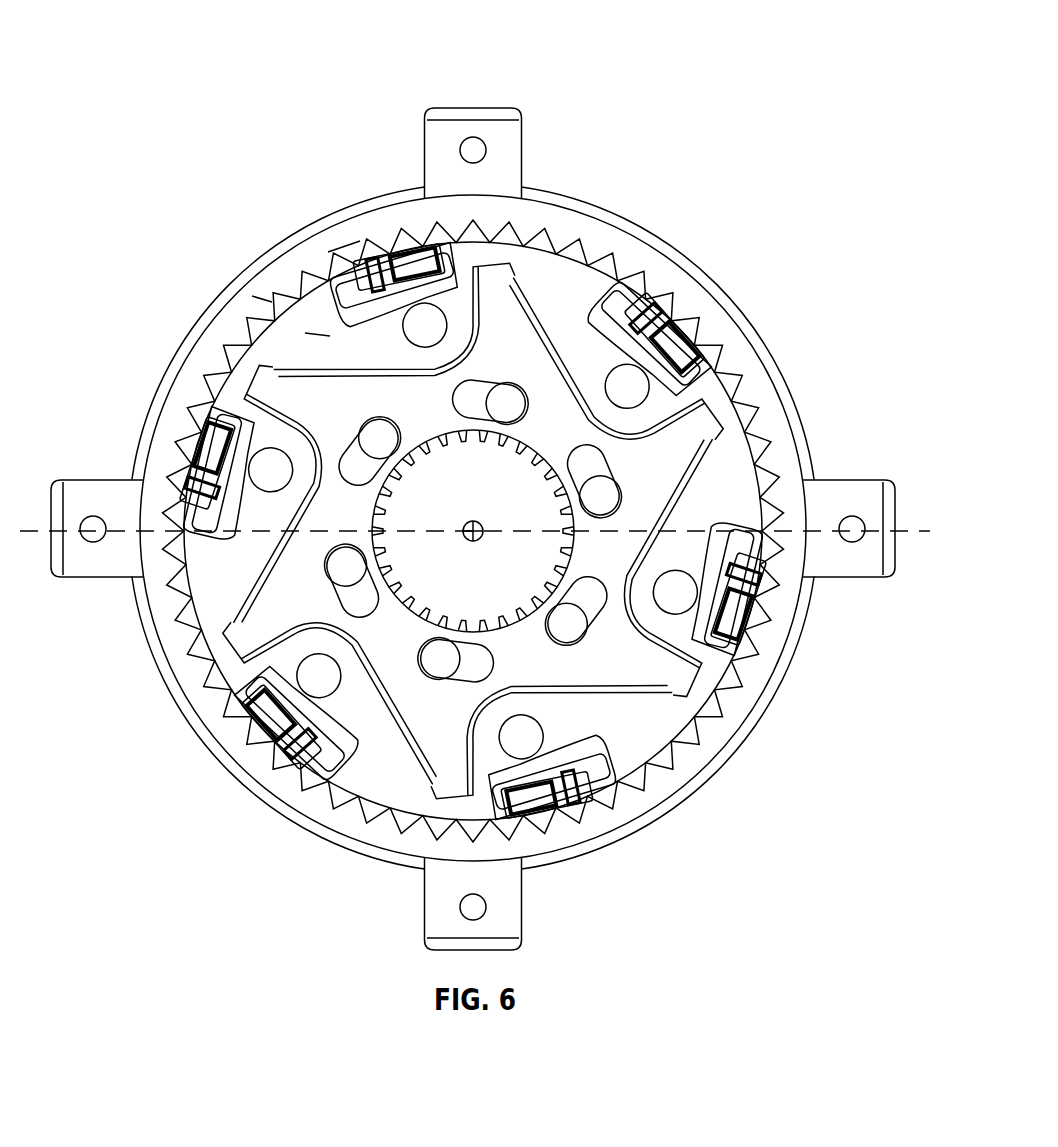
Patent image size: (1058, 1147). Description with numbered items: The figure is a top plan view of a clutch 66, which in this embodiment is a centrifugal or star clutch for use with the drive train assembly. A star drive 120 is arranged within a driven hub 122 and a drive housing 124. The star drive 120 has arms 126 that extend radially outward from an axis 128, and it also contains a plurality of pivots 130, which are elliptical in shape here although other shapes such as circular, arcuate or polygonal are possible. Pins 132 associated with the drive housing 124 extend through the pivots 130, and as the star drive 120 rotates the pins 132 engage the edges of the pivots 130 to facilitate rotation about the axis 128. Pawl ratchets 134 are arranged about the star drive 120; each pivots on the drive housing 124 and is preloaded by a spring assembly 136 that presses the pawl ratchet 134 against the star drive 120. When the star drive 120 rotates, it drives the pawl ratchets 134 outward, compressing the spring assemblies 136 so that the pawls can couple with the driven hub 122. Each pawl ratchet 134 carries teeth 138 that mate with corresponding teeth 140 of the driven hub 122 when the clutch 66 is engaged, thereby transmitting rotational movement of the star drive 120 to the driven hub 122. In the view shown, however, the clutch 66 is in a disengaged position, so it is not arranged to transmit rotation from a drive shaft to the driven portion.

The clutch 66 is at (704, 60).
The star drive 120 is at (702, 430).
The driven hub 122 is at (636, 256).
The drive housing 124 is at (690, 313).
The arms 126 is at (391, 255).
The axis 128 is at (474, 545).
The pivots 130 is at (343, 485).
The pins 132 is at (270, 293).
The pawl ratchets 134 is at (283, 318).
The spring assembly 136 is at (352, 250).
The teeth 138 is at (262, 295).
The teeth 140 is at (316, 320).